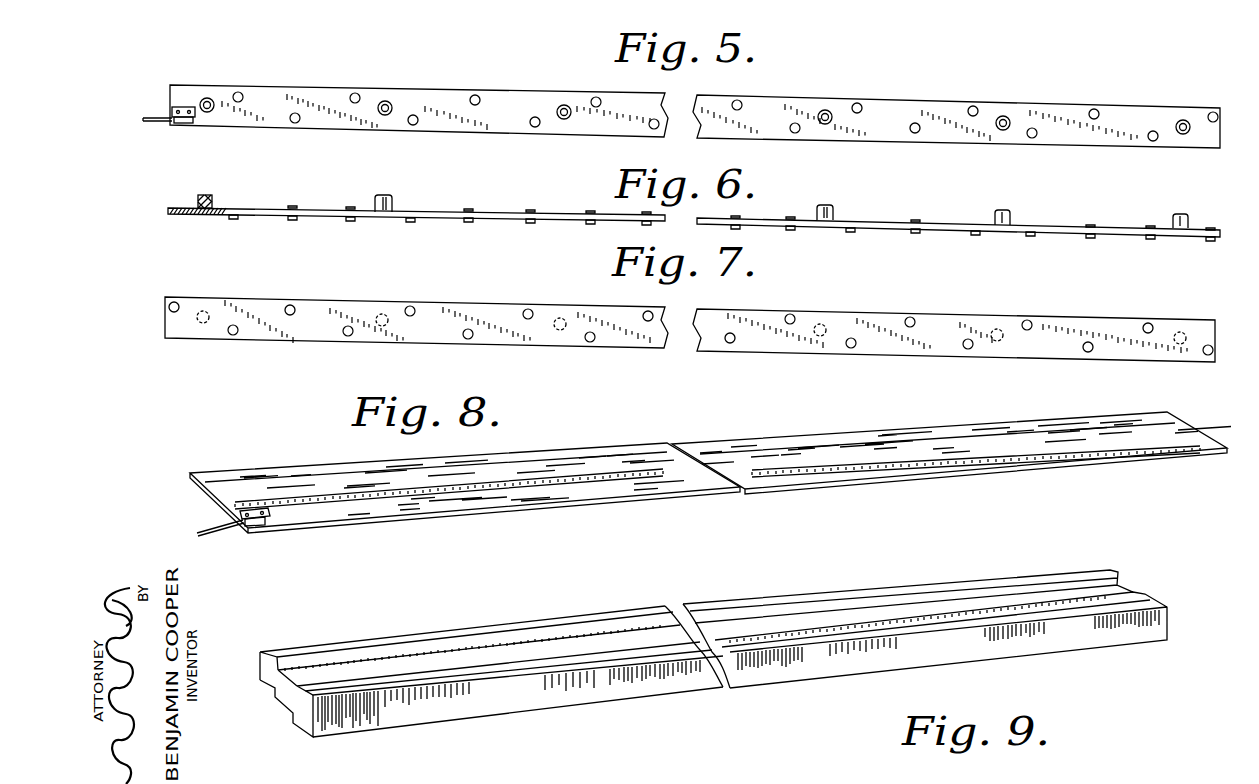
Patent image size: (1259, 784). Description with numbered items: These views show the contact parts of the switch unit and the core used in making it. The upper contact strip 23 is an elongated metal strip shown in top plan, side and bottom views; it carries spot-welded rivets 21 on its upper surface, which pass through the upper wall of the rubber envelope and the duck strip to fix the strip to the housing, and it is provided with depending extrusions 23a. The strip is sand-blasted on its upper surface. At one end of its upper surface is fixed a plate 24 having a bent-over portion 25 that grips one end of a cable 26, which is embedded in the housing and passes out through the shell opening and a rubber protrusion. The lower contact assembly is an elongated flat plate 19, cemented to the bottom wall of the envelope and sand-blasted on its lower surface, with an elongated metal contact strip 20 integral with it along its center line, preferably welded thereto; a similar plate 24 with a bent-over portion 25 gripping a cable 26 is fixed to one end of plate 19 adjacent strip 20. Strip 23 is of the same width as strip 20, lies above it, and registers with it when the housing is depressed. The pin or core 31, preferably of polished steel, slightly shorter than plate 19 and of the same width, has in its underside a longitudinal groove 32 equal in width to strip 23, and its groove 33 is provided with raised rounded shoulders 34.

In FIG. 8, the flat plate 19 is at (1192, 443).
In FIG. 8, the contact strip 20 is at (1180, 427).
In FIG. 5, the rivets 21 is at (207, 98).
In FIG. 6, the rivets 21 is at (213, 200).
In FIG. 7, the rivets 21 is at (205, 311).
In FIG. 5, the contact strip 23 is at (1221, 133).
In FIG. 6, the contact strip 23 is at (1221, 233).
In FIG. 7, the contact strip 23 is at (1217, 339).
In FIG. 5, the depending extrusions 23a is at (534, 118).
In FIG. 6, the depending extrusions 23a is at (350, 222).
In FIG. 7, the depending extrusions 23a is at (288, 313).
In FIG. 5, the plate 24 is at (198, 115).
In FIG. 8, the plate 24 is at (272, 513).
In FIG. 5, the bent-over portion 25 is at (183, 124).
In FIG. 8, the bent-over portion 25 is at (258, 522).
In FIG. 5, the cable 26 is at (150, 123).
In FIG. 8, the cable 26 is at (213, 532).
In FIG. 9, the pin or core 31 is at (1133, 634).
In FIG. 9, the longitudinal groove 32 is at (288, 706).
In FIG. 9, the groove 33 is at (328, 672).
In FIG. 9, the raised rounded shoulders 34 is at (273, 650).